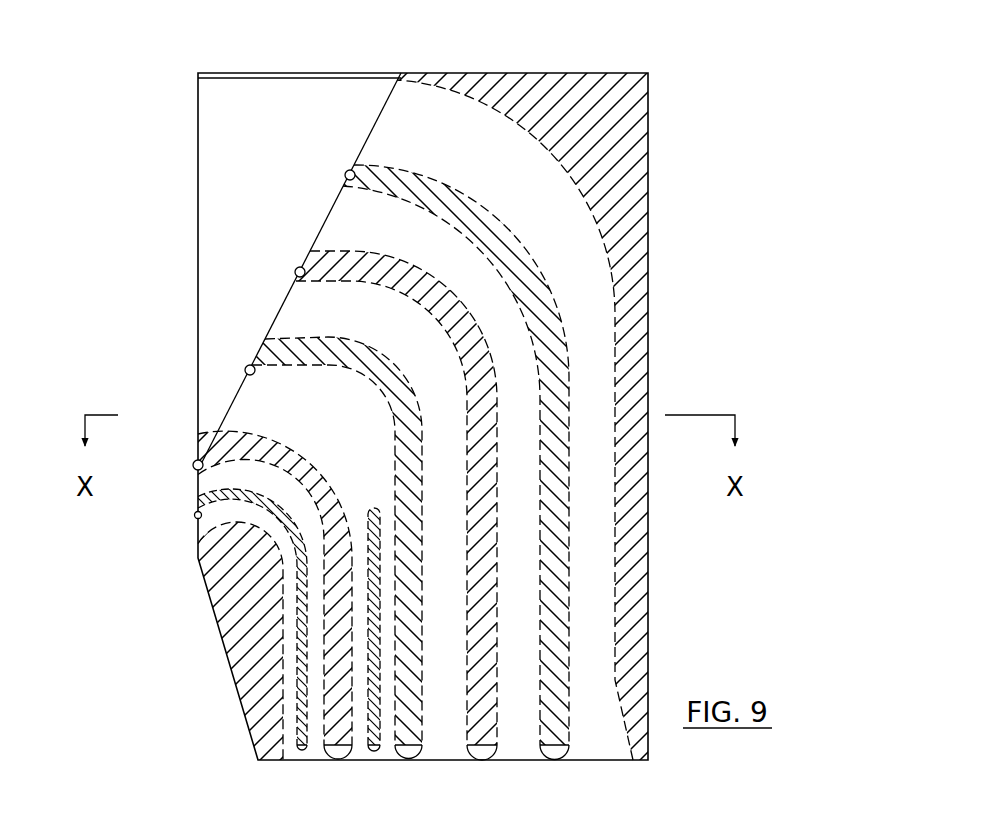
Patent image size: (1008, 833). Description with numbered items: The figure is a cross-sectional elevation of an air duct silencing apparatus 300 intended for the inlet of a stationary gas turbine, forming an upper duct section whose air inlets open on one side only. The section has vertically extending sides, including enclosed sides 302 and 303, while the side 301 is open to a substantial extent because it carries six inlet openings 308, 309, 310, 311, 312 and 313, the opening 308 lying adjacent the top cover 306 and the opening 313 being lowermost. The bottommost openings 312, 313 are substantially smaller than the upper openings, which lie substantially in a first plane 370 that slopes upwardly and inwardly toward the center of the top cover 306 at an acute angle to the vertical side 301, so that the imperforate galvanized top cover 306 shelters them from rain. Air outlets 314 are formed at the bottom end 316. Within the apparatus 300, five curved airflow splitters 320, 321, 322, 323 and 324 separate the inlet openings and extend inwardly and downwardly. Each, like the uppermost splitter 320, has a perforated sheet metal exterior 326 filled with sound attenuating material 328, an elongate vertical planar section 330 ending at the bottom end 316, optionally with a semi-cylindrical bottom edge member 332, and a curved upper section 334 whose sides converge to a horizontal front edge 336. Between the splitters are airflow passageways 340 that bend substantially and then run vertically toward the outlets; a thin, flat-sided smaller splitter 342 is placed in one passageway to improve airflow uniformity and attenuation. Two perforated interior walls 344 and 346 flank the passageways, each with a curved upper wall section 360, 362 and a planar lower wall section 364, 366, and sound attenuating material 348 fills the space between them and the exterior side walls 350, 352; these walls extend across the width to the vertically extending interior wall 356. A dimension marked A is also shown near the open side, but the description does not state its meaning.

The silencing apparatus 300 is at (480, 56).
The vertically extending side 301 is at (198, 292).
The enclosed side 302 is at (213, 186).
The enclosed side 303 is at (650, 357).
The top cover 306 is at (322, 72).
The inlet opening 308 is at (380, 122).
The inlet opening 309 is at (322, 232).
The inlet opening 310 is at (280, 312).
The inlet opening 311 is at (230, 404).
The inlet opening 312 is at (210, 501).
The inlet opening 313 is at (220, 527).
The air outlets 314 is at (443, 767).
The bottom end 316 is at (261, 766).
The airflow splitter 320 is at (346, 170).
The airflow splitter 321 is at (296, 270).
The airflow splitter 322 is at (253, 362).
The airflow splitter 323 is at (195, 458).
The airflow splitter 324 is at (194, 515).
The perforated sheet metal exterior 326 is at (527, 221).
The sound attenuating material 328 is at (480, 192).
The planar section 330 is at (580, 548).
The semi-cylindrical bottom edge member 332 is at (553, 758).
The curved upper section 334 is at (453, 218).
The front edge 336 is at (356, 169).
The airflow passageways 340 is at (595, 296).
The smaller splitter 342 is at (366, 730).
The interior wall 344 is at (240, 682).
The interior wall 346 is at (592, 212).
The sound attenuating material 348 is at (633, 165).
The exterior side wall 350 is at (652, 125).
The exterior side wall 352 is at (230, 659).
The vertically extending interior wall 356 is at (598, 491).
The curved upper wall section 360 is at (228, 525).
The curved upper wall section 362 is at (513, 118).
The planar lower wall section 364 is at (248, 705).
The planar lower wall section 366 is at (613, 345).
The first plane 370 is at (333, 207).
The offset distance A is at (245, 373).